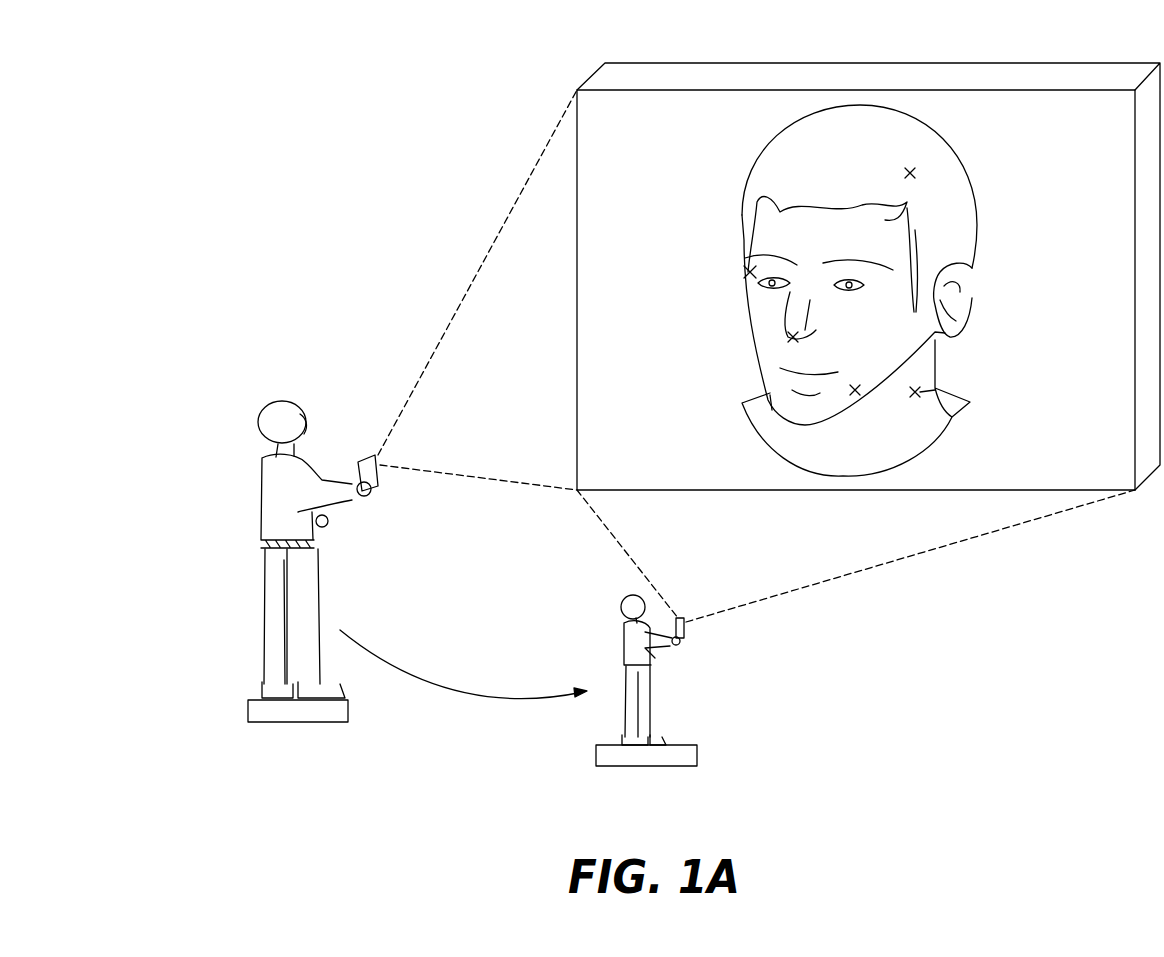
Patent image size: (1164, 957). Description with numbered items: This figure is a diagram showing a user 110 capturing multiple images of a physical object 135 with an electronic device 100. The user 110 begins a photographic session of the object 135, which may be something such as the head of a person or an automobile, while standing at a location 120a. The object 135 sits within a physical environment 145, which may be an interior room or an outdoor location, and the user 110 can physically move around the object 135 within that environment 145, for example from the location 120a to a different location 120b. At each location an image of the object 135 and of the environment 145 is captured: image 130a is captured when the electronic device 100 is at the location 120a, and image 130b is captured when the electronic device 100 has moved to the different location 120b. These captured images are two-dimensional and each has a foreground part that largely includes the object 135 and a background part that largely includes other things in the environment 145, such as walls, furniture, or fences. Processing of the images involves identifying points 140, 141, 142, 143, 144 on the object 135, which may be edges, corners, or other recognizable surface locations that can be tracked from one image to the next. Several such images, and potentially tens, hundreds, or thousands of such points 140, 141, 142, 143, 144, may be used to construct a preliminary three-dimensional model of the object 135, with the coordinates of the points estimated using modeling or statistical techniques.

The electronic device 100 is at (379, 487).
The user 110 is at (262, 500).
The location 120a is at (349, 712).
The different location 120b is at (698, 752).
The image 130a is at (1033, 100).
The image 130b is at (1091, 75).
The physical object 135 is at (710, 186).
The point 140 is at (746, 275).
The point 141 is at (794, 332).
The point 142 is at (855, 385).
The point 143 is at (953, 418).
The point 144 is at (910, 168).
The physical environment 145 is at (463, 148).